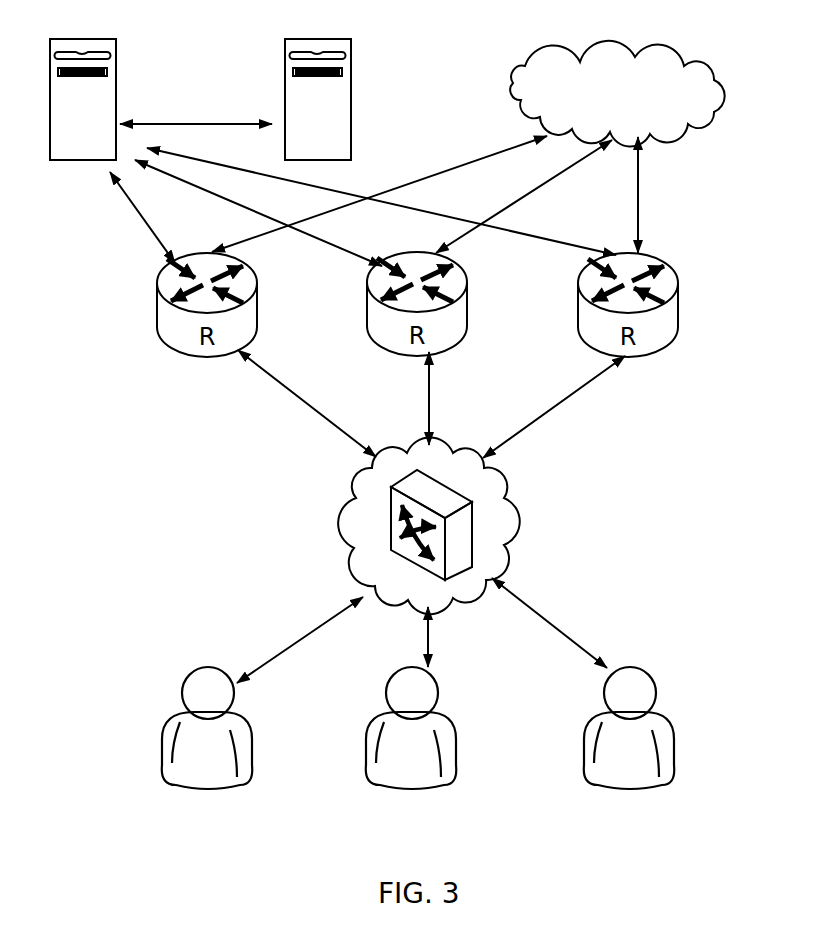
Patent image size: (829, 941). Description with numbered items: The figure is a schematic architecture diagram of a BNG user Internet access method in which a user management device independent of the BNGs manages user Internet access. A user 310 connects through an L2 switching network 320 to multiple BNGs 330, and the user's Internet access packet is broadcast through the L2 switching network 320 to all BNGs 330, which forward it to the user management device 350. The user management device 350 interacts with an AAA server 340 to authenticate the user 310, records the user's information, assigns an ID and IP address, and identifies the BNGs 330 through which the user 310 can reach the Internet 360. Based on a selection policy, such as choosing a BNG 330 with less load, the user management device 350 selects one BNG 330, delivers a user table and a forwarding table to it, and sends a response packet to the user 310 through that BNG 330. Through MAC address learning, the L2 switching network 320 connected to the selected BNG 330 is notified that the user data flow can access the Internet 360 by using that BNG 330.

The user 310 is at (645, 672).
The L2 switching network 320 is at (508, 518).
The BNG 330 is at (678, 300).
The AAA server 340 is at (349, 110).
The user management device 350 is at (116, 105).
The Internet 360 is at (552, 57).